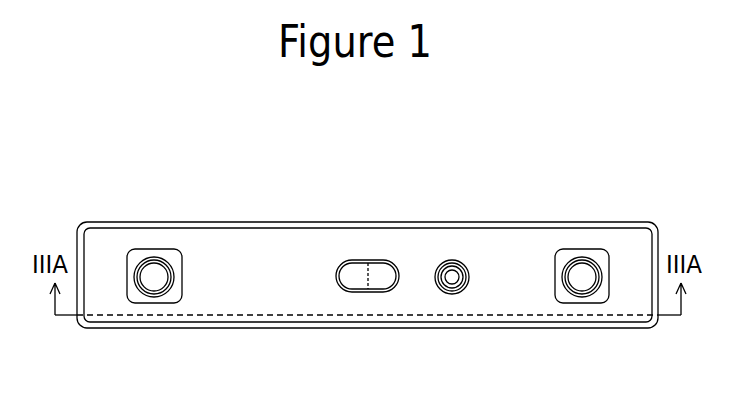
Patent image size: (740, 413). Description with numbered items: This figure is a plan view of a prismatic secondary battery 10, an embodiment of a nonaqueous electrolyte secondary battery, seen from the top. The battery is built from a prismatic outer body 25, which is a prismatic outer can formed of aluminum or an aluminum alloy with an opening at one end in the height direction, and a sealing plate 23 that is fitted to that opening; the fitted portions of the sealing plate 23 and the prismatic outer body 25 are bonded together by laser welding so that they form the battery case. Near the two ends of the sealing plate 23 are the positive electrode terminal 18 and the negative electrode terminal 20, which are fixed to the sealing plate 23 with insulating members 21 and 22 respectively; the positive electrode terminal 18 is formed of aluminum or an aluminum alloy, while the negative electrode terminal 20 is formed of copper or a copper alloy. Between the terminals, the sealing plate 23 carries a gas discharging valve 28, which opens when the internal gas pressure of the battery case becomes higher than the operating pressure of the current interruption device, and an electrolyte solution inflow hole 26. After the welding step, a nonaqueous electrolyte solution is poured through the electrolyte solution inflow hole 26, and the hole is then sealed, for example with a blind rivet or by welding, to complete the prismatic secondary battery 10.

The prismatic secondary battery 10 is at (339, 168).
The positive electrode terminal 18 is at (578, 276).
The negative electrode terminal 20 is at (152, 277).
The insulating member 21 is at (600, 295).
The insulating member 22 is at (171, 295).
The sealing plate 23 is at (273, 248).
The prismatic outer body 25 is at (355, 327).
The electrolyte solution inflow hole 26 is at (450, 287).
The gas discharging valve 28 is at (380, 268).